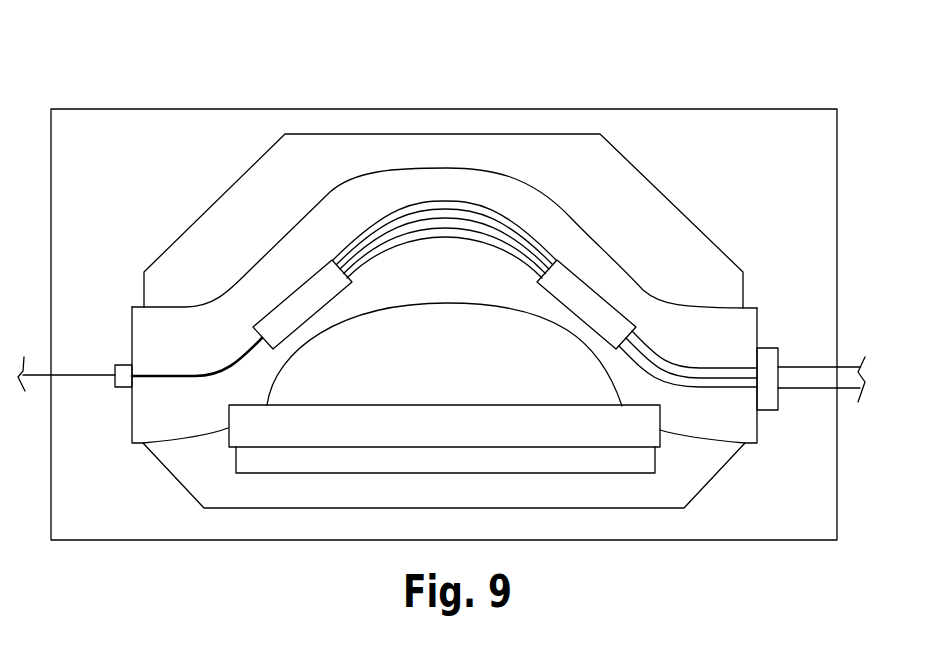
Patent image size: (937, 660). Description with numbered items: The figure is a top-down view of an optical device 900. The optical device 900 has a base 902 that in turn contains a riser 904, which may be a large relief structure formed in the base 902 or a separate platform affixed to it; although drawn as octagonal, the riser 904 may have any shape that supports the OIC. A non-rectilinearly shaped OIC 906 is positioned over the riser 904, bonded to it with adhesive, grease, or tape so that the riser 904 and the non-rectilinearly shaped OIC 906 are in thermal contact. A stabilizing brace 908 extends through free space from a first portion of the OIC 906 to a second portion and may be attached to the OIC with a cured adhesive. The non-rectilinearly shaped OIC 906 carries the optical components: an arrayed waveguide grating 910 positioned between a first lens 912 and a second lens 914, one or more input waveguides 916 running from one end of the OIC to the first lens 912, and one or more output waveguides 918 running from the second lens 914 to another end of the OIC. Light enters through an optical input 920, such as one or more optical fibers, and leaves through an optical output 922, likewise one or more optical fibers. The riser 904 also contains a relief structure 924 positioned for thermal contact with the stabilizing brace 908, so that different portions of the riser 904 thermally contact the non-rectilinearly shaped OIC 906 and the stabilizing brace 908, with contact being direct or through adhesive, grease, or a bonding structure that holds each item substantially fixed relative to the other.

The optical device 900 is at (351, 62).
The base 902 is at (731, 108).
The riser 904 is at (612, 135).
The non-rectilinearly shaped OIC 906 is at (478, 167).
The stabilizing brace 908 is at (585, 432).
The arrayed waveguide grating 910 is at (373, 220).
The first lens 912 is at (293, 284).
The second lens 914 is at (568, 282).
The input waveguide 916 is at (227, 367).
The output waveguide 918 is at (667, 358).
The optical input 920 is at (83, 375).
The optical output 922 is at (806, 390).
The relief structure 924 is at (298, 458).